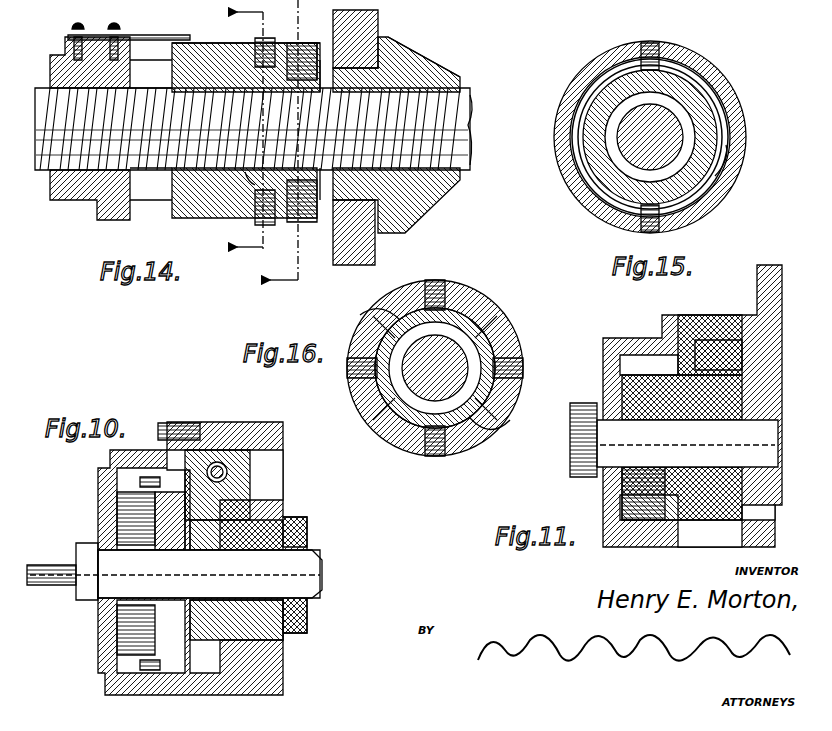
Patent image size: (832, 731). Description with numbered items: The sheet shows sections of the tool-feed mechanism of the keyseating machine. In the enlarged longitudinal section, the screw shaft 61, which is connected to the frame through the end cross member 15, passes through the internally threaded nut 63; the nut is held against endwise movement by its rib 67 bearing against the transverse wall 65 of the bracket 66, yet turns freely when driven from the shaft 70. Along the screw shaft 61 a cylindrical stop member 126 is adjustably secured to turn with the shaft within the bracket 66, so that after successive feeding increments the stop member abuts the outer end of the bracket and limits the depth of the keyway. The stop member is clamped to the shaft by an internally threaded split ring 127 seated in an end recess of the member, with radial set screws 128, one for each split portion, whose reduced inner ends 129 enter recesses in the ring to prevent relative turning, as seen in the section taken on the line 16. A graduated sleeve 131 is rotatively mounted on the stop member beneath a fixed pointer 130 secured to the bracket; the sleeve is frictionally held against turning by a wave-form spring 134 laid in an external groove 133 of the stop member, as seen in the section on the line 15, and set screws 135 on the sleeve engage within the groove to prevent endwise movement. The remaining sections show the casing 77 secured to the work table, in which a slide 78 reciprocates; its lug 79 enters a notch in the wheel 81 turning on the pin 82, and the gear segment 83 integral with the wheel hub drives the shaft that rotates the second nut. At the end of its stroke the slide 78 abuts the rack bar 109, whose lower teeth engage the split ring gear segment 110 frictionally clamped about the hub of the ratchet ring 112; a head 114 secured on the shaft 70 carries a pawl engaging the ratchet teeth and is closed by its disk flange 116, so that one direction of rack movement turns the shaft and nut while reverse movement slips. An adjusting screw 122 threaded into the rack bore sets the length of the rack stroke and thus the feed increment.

In FIG. 14, the end cross member 15 is at (233, 132).
In FIG. 14, the section line 16- 16 is at (270, 145).
In FIG. 14, the screw shaft 61 is at (470, 128).
In FIG. 15, the screw shaft 61 is at (640, 152).
In FIG. 16, the screw shaft 61 is at (455, 375).
In FIG. 14, the nut 63 is at (452, 68).
In FIG. 14, the transverse wall 65 is at (379, 17).
In FIG. 14, the bracket 66 is at (72, 196).
In FIG. 14, the rib 67 is at (422, 42).
In FIG. 10, the shaft 70 is at (310, 572).
In FIG. 10, the casing 77 is at (285, 665).
In FIG. 11, the casing 77 is at (632, 335).
In FIG. 11, the slide 78 is at (722, 355).
In FIG. 11, the lug 79 is at (688, 360).
In FIG. 11, the wheel 81 is at (700, 508).
In FIG. 11, the pin 82 is at (674, 440).
In FIG. 11, the gear segment 83 is at (640, 512).
In FIG. 10, the rack bar 109 is at (252, 466).
In FIG. 10, the split ring gear segment 110 is at (255, 502).
In FIG. 10, the ratchet ring 112 is at (138, 482).
In FIG. 10, the head 114 is at (140, 540).
In FIG. 10, the disk flange 116 is at (110, 500).
In FIG. 10, the adjusting screw 122 is at (218, 462).
In FIG. 14, the stop member 126 is at (170, 198).
In FIG. 15, the stop member 126 is at (572, 95).
In FIG. 16, the stop member 126 is at (510, 316).
In FIG. 14, the split ring 127 is at (327, 178).
In FIG. 16, the split ring 127 is at (482, 305).
In FIG. 14, the set screws 128 is at (295, 45).
In FIG. 16, the set screws 128 is at (433, 282).
In FIG. 14, the reduced inner end 129 is at (322, 68).
In FIG. 16, the reduced inner end 129 is at (395, 305).
In FIG. 14, the pointer 130 is at (167, 33).
In FIG. 14, the sleeve 131 is at (262, 38).
In FIG. 14, the groove 133 is at (245, 182).
In FIG. 15, the groove 133 is at (690, 85).
In FIG. 14, the spring 134 is at (262, 50).
In FIG. 15, the spring 134 is at (718, 172).
In FIG. 15, the set screws 135 is at (650, 42).